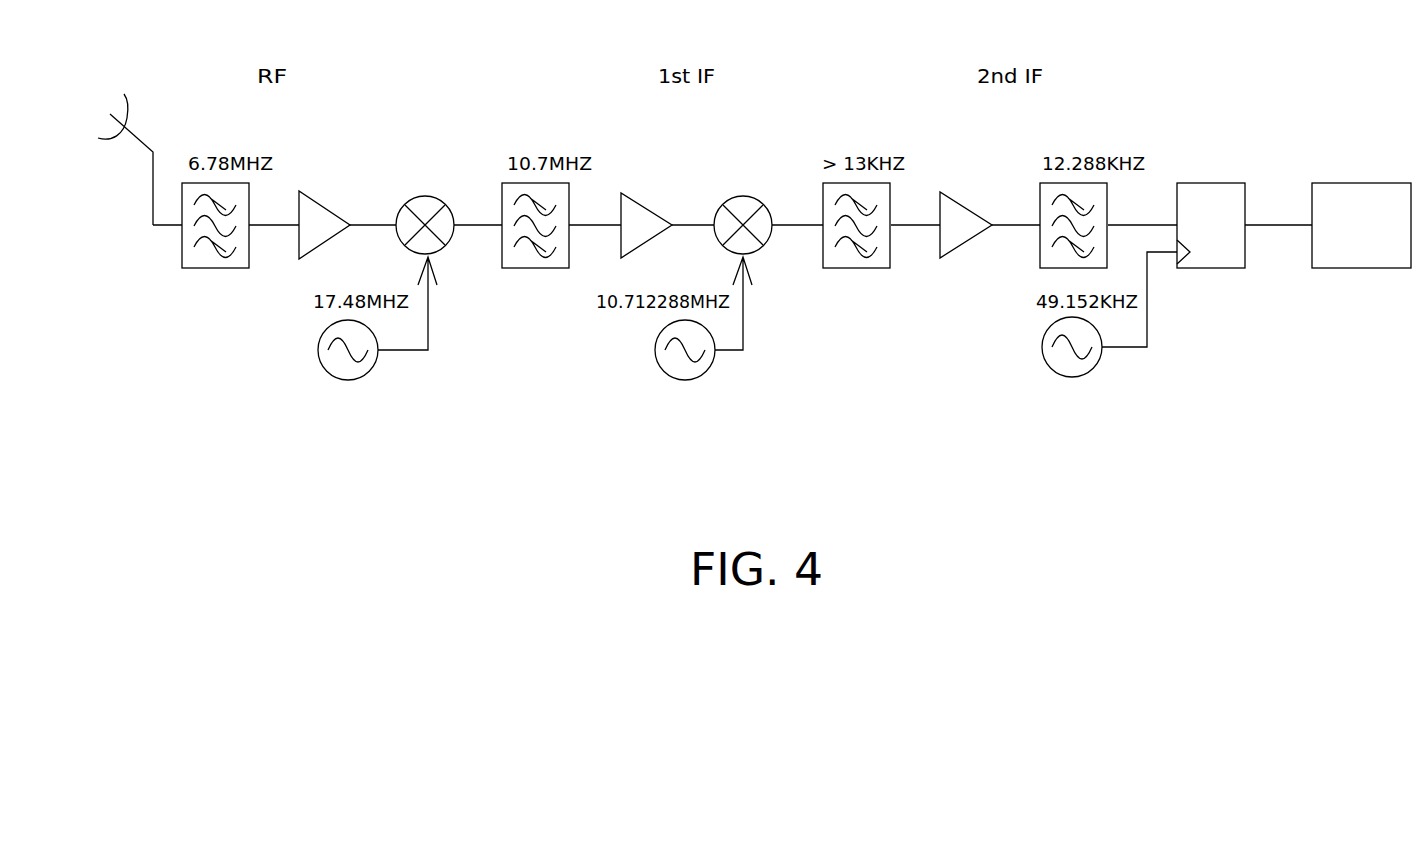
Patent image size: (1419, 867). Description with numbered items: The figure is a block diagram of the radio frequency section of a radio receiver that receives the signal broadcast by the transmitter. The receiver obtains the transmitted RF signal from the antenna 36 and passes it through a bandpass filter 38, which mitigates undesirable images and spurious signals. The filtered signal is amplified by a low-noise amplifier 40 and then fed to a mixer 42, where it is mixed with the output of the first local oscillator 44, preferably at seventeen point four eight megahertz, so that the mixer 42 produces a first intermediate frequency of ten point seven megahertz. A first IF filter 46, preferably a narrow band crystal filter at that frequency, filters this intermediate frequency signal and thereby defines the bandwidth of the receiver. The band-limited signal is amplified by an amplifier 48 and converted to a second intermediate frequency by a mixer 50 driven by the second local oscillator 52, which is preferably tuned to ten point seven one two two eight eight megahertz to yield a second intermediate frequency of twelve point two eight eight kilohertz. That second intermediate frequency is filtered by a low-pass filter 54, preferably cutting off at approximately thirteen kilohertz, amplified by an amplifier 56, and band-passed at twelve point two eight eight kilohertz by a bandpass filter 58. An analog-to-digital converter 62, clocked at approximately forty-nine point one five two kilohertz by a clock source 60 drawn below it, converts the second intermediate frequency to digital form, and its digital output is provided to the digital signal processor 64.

The antenna 36 is at (130, 108).
The bandpass filter 38 is at (182, 253).
The low-noise amplifier 40 is at (318, 203).
The mixer 42 is at (440, 196).
The first local oscillator 44 is at (318, 356).
The first IF filter 46 is at (535, 268).
The amplifier 48 is at (652, 208).
The mixer 50 is at (747, 192).
The second local oscillator 52 is at (653, 362).
The low-pass filter 54 is at (828, 268).
The amplifier 56 is at (970, 205).
The bandpass filter 58 is at (1040, 247).
The 49.152 kHz sampling clock oscillator 60 is at (1062, 377).
The analog-to-digital converter 62 is at (1238, 183).
The digital signal processor 64 is at (1378, 268).